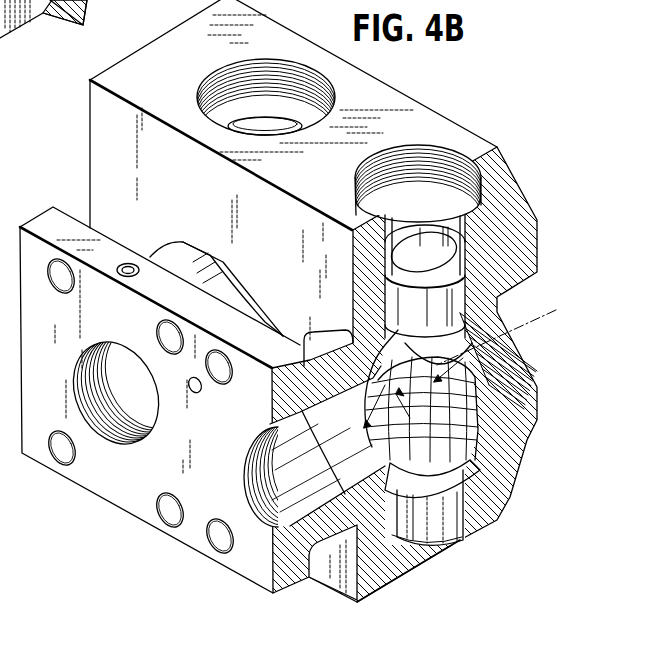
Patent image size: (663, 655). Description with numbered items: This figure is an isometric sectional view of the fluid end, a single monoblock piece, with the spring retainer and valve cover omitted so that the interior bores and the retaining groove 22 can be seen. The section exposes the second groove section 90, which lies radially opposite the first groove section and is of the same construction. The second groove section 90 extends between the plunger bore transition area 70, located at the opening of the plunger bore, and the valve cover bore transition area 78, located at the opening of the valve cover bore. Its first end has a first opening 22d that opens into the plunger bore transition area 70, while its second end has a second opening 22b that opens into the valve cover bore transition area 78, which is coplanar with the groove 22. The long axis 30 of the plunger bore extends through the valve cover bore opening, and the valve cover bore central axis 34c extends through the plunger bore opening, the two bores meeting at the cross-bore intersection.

The long axis of the plunger bore 30 is at (146, 547).
The groove 22 is at (434, 528).
The second opening 22b is at (395, 582).
The first opening 22d is at (508, 340).
The valve cover bore central axis 34c is at (520, 333).
The plunger bore transition area 70 is at (44, 12).
The valve cover bore transition area 78 is at (523, 440).
The second groove section 90 is at (462, 537).